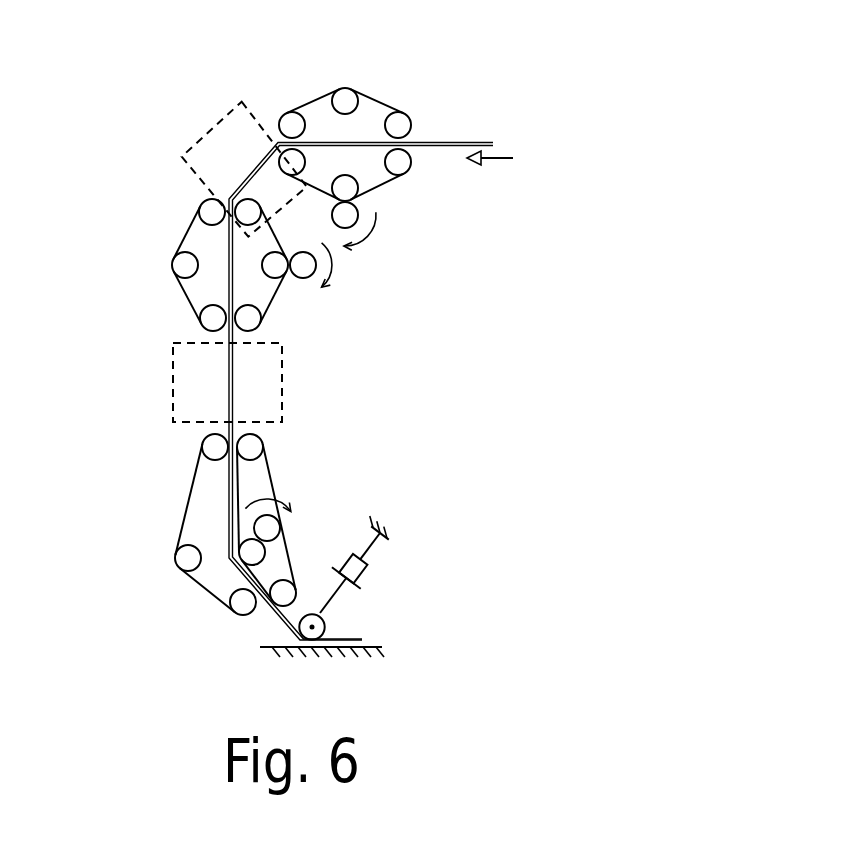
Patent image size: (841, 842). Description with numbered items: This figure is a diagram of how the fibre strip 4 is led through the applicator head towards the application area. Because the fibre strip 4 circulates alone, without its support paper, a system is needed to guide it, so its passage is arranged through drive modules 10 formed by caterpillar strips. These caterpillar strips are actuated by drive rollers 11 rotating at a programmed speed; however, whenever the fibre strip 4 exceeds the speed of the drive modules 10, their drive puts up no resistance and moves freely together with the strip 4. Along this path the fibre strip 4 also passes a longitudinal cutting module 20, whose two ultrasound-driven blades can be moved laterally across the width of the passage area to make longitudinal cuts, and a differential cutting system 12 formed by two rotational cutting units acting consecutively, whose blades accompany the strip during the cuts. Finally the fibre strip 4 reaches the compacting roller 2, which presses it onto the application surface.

The compacting roller 2 is at (314, 627).
The fibre strip 4 is at (452, 143).
The drive modules 10 is at (384, 98).
The drive rollers 11 is at (280, 528).
The differential cutting system 12 is at (166, 378).
The longitudinal cutting module 20 is at (210, 122).